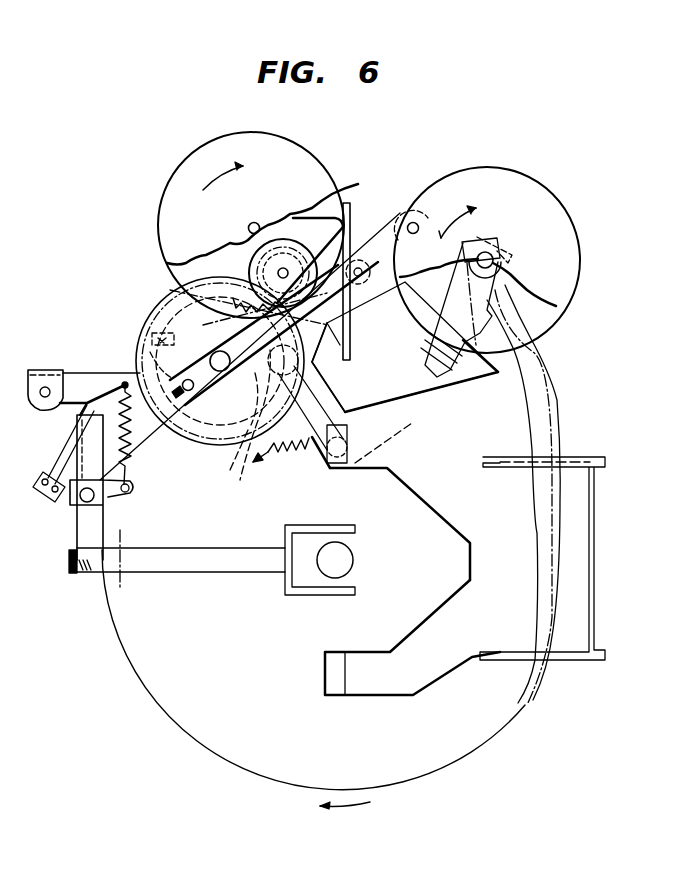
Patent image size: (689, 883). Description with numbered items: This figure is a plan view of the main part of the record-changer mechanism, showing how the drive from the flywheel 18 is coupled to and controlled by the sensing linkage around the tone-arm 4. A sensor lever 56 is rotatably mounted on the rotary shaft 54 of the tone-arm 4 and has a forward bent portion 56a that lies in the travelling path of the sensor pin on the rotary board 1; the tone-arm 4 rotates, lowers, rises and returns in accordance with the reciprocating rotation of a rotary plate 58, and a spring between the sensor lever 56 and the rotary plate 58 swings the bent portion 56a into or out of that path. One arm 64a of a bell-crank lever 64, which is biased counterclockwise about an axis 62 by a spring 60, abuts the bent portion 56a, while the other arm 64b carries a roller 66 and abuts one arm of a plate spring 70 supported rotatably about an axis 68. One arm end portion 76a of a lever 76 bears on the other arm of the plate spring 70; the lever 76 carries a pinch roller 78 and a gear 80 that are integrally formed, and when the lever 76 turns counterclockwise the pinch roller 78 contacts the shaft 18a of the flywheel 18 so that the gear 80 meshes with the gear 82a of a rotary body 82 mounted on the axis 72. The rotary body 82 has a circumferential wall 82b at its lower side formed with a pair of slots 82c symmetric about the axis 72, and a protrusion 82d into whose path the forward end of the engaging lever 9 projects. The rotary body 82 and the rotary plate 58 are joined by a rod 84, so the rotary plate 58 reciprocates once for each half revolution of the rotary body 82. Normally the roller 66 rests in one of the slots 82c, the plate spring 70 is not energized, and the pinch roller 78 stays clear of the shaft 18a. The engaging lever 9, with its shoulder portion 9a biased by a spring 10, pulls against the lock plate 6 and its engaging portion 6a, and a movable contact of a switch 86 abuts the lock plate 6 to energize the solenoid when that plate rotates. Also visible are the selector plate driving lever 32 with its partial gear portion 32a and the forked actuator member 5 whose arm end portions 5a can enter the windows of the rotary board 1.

The rotary board 1 is at (462, 771).
The tone-arm 4 is at (555, 424).
The forked actuator member 5 is at (452, 663).
The arm end portions 5a is at (325, 673).
The lock plate 6 is at (75, 462).
The engaging portion 6a is at (88, 573).
The engaging lever 9 is at (57, 369).
The shoulder portion 9a is at (97, 400).
The spring 10 is at (135, 442).
The flywheel 18 is at (196, 164).
The shaft of the flywheel 18a is at (254, 222).
The selector plate driving lever 32 is at (175, 573).
The partial gear portion 32a is at (68, 568).
The rotary shaft 54 is at (502, 261).
The sensor lever 56 is at (458, 302).
The forward bent portion 56a is at (431, 366).
The rotary plate 58 is at (535, 200).
The spring 60 is at (290, 453).
The axis 62 is at (340, 467).
The bell-crank lever 64 is at (388, 405).
The one arm 64a is at (463, 383).
The other arm 64b is at (313, 366).
The roller 66 is at (318, 424).
The axis 68 is at (366, 283).
The plate spring 70 is at (347, 300).
The axis 72 is at (228, 368).
The lever 76 is at (186, 300).
The arm end portion 76a is at (327, 222).
The pinch roller 78 is at (281, 245).
The gear 80 is at (254, 262).
The rotary body 82 is at (160, 316).
The gear 82a is at (209, 262).
The circumferential wall 82b is at (238, 434).
The slots 82c is at (150, 352).
The protrusion 82d is at (152, 335).
The rod 84 is at (380, 241).
The switch 86 is at (63, 437).